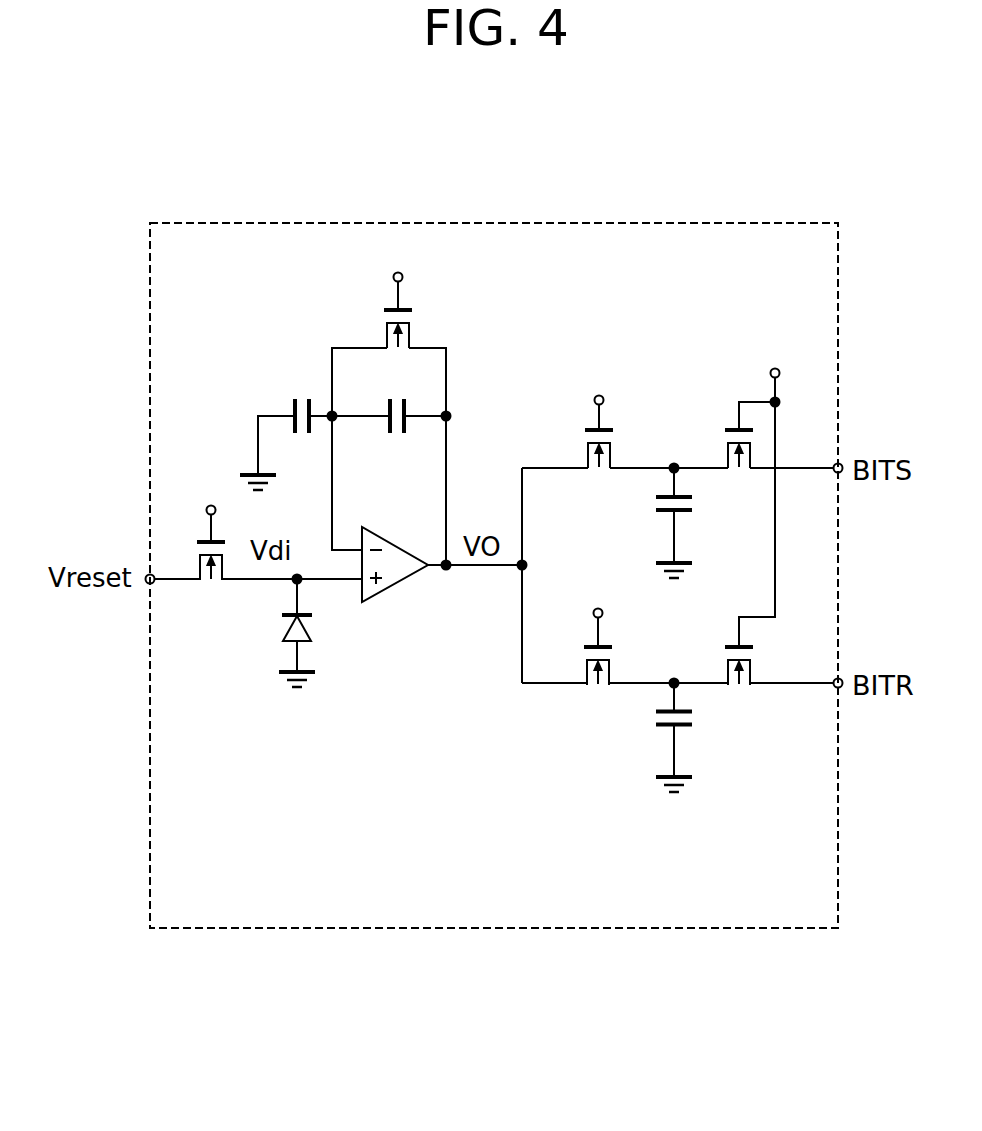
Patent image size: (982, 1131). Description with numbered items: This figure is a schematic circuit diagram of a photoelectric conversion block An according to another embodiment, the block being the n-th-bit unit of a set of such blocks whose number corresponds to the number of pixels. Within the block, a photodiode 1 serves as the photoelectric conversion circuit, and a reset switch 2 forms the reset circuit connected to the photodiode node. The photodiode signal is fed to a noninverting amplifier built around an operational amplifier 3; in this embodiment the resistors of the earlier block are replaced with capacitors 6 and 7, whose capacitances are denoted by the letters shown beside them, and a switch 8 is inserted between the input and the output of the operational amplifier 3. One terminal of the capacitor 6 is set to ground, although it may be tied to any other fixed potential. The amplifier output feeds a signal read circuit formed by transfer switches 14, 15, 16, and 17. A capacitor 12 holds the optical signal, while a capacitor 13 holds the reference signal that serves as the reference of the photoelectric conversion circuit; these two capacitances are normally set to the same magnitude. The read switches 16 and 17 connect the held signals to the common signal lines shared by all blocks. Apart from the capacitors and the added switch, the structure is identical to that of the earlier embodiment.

The photodiode 1 is at (283, 627).
The reset switch 2 is at (210, 585).
The operational amplifier 3 is at (398, 583).
The capacitor 6 is at (302, 398).
The capacitor 7 is at (396, 396).
The switch 8 is at (413, 320).
The capacitor 12 is at (650, 515).
The capacitor 13 is at (663, 733).
The transfer switch 14 is at (618, 445).
The transfer switch 15 is at (593, 688).
The read switch 16 is at (757, 445).
The read switch 17 is at (737, 688).
The photoelectric conversion block An is at (710, 223).